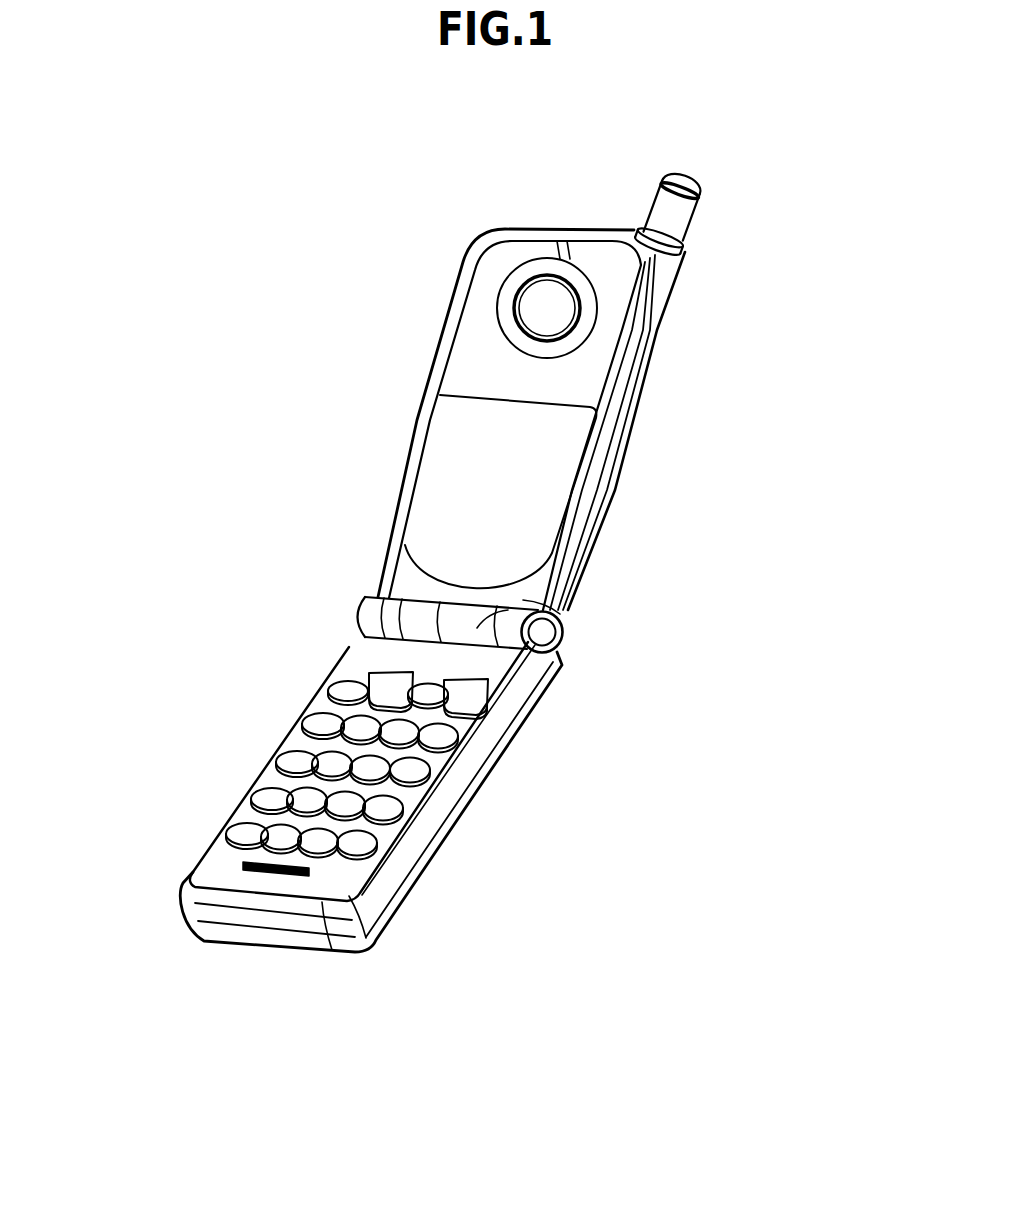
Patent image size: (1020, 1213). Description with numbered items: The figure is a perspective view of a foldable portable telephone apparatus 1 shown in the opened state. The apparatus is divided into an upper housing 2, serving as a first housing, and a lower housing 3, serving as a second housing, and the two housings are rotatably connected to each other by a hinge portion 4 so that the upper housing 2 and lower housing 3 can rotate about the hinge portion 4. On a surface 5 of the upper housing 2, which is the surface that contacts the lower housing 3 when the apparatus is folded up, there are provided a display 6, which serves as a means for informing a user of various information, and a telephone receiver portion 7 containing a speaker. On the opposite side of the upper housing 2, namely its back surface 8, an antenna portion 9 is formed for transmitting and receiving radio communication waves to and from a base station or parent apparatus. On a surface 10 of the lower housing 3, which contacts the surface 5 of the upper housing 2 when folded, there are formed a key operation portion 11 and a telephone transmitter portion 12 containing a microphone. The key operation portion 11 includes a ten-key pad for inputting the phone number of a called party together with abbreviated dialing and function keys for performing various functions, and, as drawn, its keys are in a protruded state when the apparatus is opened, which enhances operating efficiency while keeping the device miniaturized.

The foldable portable telephone apparatus 1 is at (356, 552).
The upper housing 2 is at (428, 393).
The lower housing 3 is at (280, 742).
The hinge portion 4 is at (565, 613).
The surface 5 is at (463, 350).
The display 6 is at (533, 478).
The telephone receiver portion 7 is at (558, 307).
The back surface 8 is at (655, 337).
The antenna portion 9 is at (673, 212).
The surface 10 is at (348, 652).
The key operation portion 11 is at (448, 755).
The telephone transmitter portion 12 is at (277, 873).